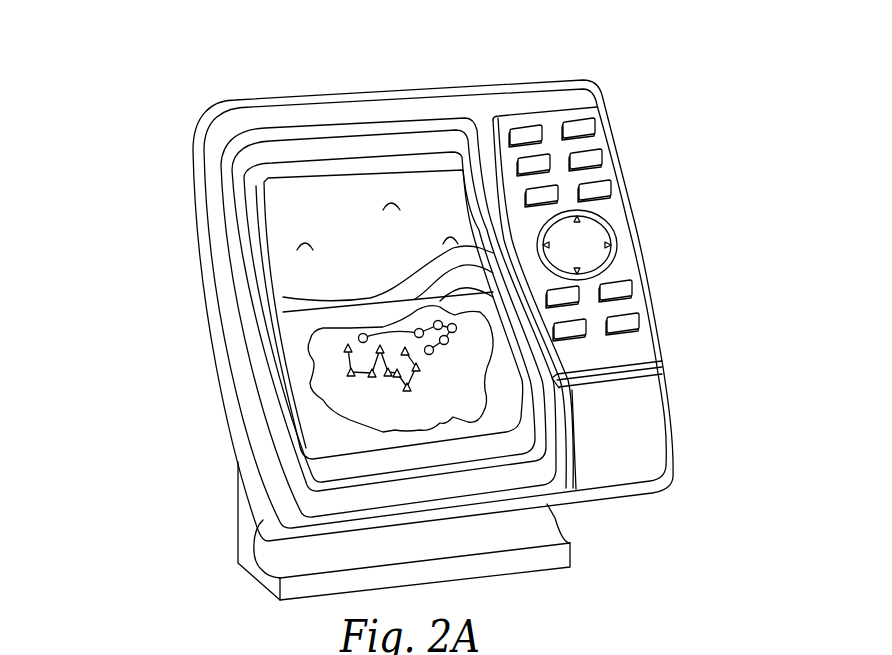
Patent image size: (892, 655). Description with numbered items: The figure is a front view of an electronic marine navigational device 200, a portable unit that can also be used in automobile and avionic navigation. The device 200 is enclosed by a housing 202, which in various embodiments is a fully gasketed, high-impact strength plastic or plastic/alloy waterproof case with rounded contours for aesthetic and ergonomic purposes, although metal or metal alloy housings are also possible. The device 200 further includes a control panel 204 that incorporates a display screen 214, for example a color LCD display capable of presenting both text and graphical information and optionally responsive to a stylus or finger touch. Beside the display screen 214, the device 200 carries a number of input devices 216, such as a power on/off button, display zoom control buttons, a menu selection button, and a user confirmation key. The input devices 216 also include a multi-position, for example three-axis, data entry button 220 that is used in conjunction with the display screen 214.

The electronic marine navigational device 200 is at (152, 53).
The housing 202 is at (206, 131).
The control panel 204 is at (597, 72).
The display screen 214 is at (292, 218).
The input devices 216 is at (662, 78).
The multi-position data entry button 220 is at (585, 243).